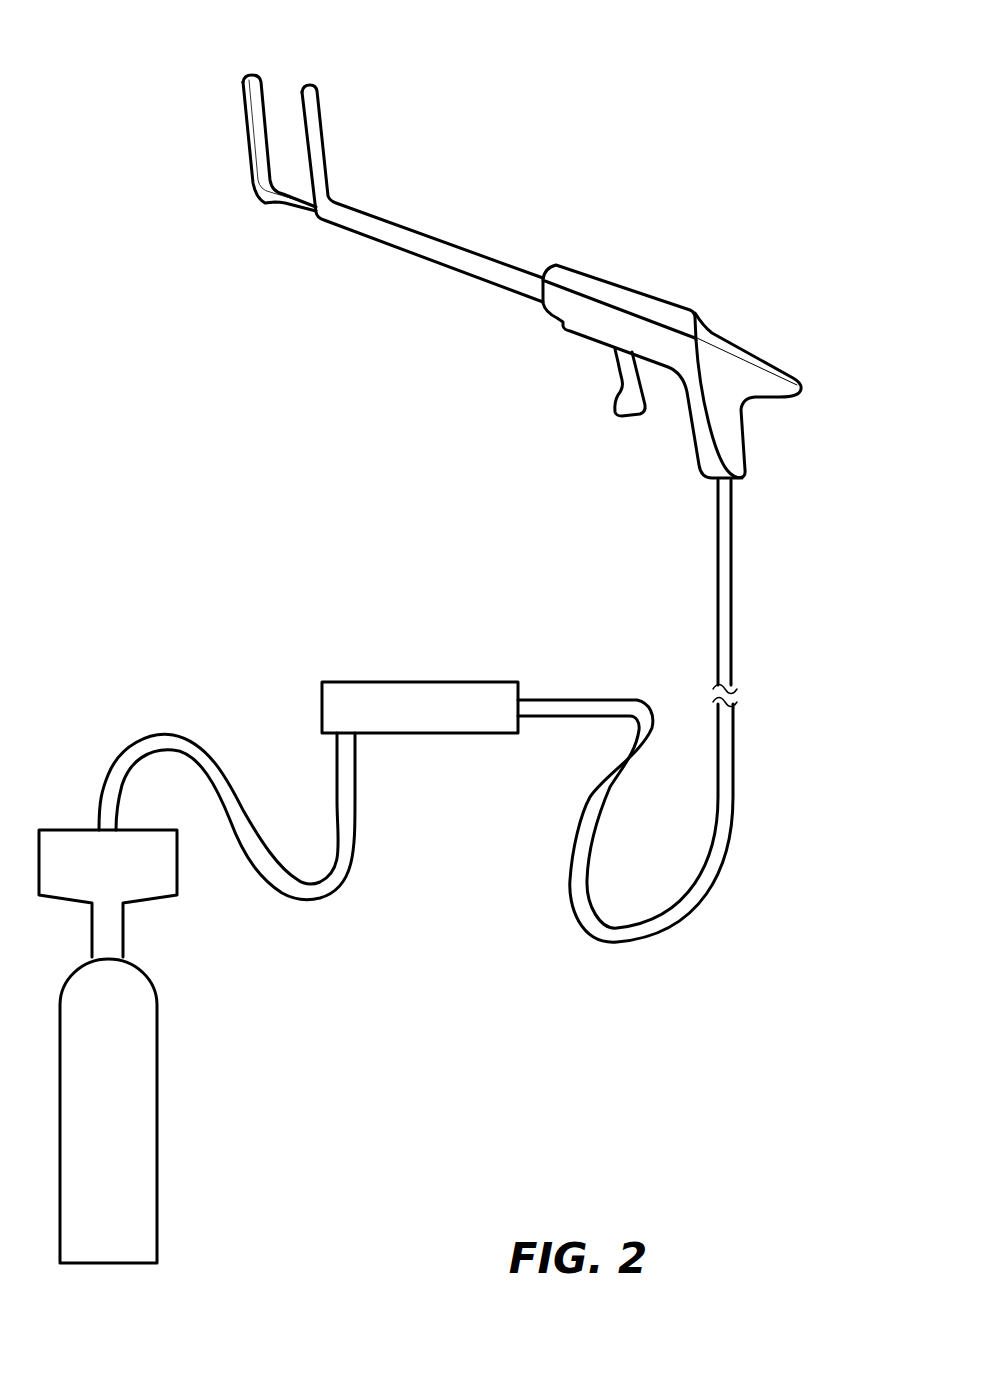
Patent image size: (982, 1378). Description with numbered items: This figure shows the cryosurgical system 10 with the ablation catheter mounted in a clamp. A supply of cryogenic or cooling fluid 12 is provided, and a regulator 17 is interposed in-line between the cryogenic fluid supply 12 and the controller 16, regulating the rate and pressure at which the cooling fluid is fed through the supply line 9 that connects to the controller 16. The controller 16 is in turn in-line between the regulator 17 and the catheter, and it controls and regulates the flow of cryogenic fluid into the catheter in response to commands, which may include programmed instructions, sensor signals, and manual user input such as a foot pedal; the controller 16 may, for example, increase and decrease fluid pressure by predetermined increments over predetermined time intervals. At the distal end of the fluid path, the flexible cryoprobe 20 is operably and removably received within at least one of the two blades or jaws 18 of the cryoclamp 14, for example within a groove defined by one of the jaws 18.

The supply line 9 is at (133, 740).
The cryosurgical system 10 is at (424, 668).
The cryogenic fluid supply 12 is at (157, 1144).
The cryoclamp 14 is at (549, 196).
The controller 16 is at (353, 682).
The regulator 17 is at (97, 877).
The jaws 18 is at (332, 126).
The cryoprobe 20 is at (300, 96).